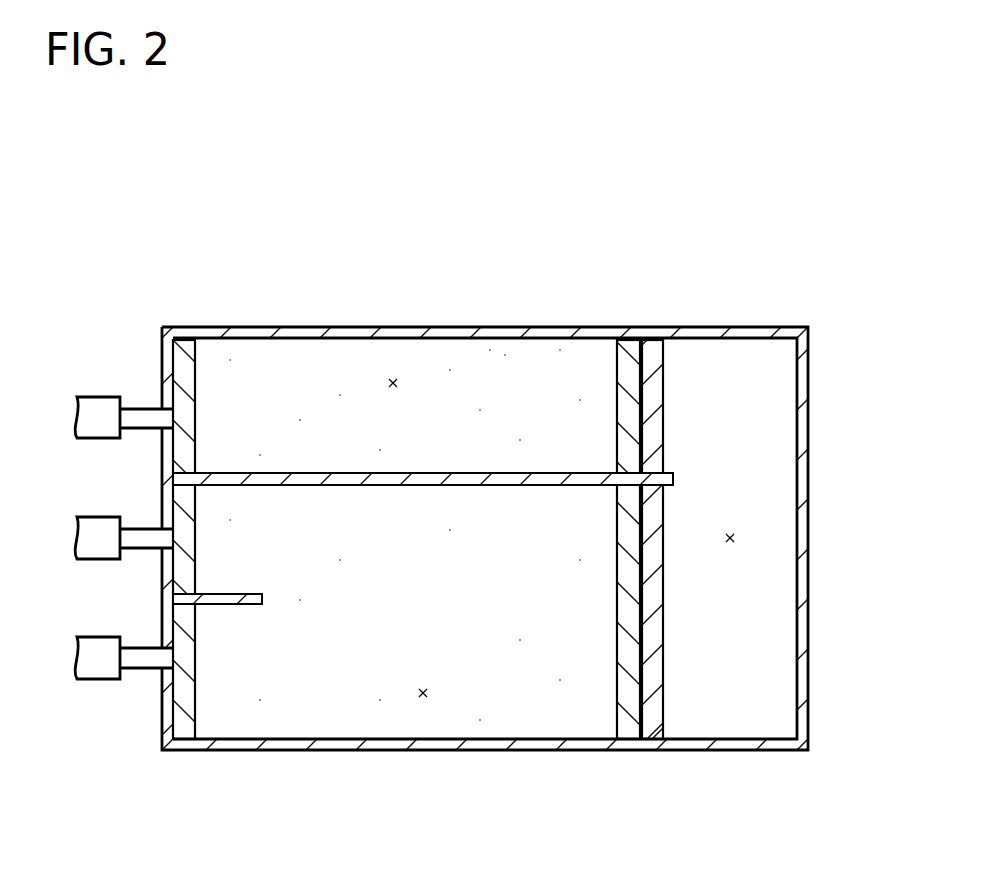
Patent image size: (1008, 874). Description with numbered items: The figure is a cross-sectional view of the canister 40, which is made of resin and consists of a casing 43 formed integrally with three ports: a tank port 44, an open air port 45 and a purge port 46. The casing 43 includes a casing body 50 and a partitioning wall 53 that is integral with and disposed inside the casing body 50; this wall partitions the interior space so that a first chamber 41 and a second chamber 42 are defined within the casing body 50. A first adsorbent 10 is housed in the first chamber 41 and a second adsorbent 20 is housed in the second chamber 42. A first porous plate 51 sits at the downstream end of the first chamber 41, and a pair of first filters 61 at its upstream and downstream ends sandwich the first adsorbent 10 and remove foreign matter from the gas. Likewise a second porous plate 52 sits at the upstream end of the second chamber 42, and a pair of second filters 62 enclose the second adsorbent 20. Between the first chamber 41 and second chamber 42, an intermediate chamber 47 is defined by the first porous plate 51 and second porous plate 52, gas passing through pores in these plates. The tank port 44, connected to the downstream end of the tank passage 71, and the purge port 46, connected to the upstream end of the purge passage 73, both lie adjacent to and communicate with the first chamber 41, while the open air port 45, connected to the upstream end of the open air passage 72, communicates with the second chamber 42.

The first adsorbent 10 is at (338, 718).
The second adsorbent 20 is at (297, 360).
The canister 40 is at (797, 293).
The first chamber 41 is at (423, 693).
The second chamber 42 is at (393, 383).
The casing 43 is at (341, 333).
The tank port 44 is at (142, 637).
The open air port 45 is at (142, 397).
The purge port 46 is at (142, 517).
The intermediate chamber 47 is at (730, 538).
The casing body 50 is at (498, 338).
The first porous plate 51 is at (650, 665).
The second porous plate 52 is at (652, 388).
The partitioning wall 53 is at (537, 477).
The first filters 61 is at (183, 688).
The second filters 62 is at (207, 355).
The tank passage 71 is at (97, 637).
The open air passage 72 is at (97, 397).
The purge passage 73 is at (97, 517).